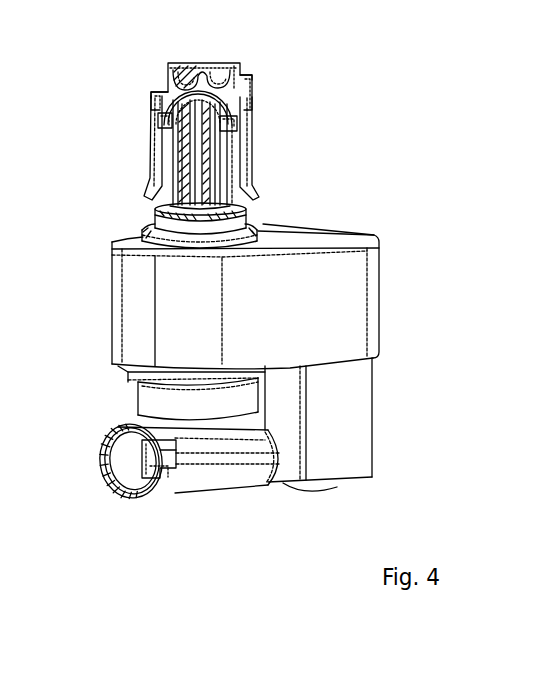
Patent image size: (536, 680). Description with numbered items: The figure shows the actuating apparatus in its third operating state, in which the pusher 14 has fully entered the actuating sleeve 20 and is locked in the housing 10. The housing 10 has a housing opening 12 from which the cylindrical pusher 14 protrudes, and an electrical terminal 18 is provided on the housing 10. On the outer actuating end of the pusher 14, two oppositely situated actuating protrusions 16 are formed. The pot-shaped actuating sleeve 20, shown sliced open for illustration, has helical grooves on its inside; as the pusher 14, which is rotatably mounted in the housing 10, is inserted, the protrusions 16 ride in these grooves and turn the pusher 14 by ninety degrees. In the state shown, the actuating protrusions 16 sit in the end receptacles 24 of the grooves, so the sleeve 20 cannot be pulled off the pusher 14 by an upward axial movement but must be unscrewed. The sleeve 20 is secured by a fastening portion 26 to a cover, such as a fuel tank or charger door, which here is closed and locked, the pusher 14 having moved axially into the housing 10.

The housing 10 is at (375, 298).
The housing opening 12 is at (145, 236).
The pusher 14 is at (239, 217).
The actuating protrusions 16 is at (160, 122).
The electrical terminal 18 is at (100, 455).
The actuating sleeve 20 is at (241, 154).
The end receptacles 24 is at (170, 110).
The fastening portion 26 is at (186, 66).